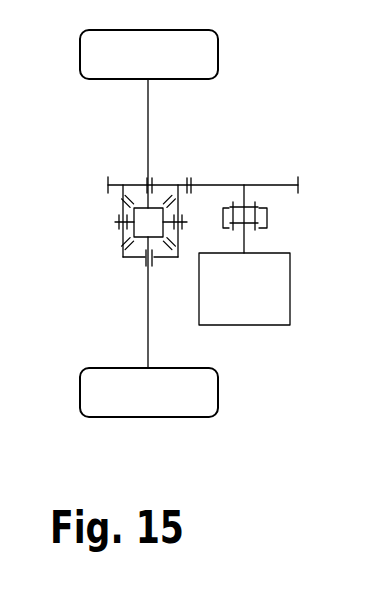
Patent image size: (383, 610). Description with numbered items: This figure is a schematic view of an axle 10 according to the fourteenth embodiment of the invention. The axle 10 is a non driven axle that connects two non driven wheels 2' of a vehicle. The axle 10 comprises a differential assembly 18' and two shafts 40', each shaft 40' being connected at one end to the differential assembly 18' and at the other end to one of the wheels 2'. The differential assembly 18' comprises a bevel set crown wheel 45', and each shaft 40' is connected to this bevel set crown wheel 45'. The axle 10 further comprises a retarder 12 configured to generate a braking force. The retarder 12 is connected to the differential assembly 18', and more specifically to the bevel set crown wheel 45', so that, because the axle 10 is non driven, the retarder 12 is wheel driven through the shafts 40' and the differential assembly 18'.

The non driven wheel 2' is at (172, 223).
The axle 10 is at (162, 165).
The shaft 40' is at (106, 223).
The differential assembly 18' is at (107, 208).
The bevel set crown wheel 45' is at (203, 171).
The retarder 12 is at (257, 317).